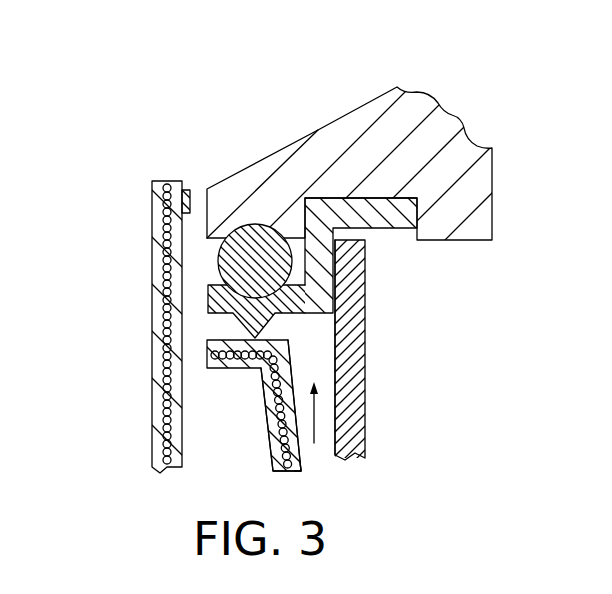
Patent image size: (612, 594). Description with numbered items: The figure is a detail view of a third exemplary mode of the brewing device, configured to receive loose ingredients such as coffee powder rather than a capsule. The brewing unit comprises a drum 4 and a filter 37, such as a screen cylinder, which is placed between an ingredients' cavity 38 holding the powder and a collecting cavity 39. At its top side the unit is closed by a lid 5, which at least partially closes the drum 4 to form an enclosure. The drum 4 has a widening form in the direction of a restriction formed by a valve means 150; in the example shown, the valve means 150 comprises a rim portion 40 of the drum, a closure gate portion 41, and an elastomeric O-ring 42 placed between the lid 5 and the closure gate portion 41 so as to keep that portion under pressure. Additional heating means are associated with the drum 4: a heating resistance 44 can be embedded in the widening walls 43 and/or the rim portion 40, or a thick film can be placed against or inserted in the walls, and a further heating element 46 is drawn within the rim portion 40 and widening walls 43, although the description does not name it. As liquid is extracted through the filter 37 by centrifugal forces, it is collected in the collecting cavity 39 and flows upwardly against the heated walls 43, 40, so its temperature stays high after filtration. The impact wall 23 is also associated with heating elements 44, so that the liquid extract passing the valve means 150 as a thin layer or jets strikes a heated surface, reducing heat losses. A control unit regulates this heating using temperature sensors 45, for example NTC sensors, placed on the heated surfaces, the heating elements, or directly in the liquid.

The lid 5 is at (316, 122).
The temperature sensor 45 is at (185, 190).
The valve means 150 is at (230, 350).
The elastomeric O-ring 42 is at (222, 262).
The closure gate portion 41 is at (220, 297).
The rim portion 40 is at (265, 405).
The impact wall 23 is at (152, 456).
The heating resistance 44 is at (172, 459).
The bent coil spring 46 is at (243, 368).
The widening walls 43 is at (272, 418).
The collecting cavity 39 is at (322, 361).
The filter 37 is at (365, 438).
The drum 4 is at (306, 462).
The ingredients' cavity 38 is at (487, 352).